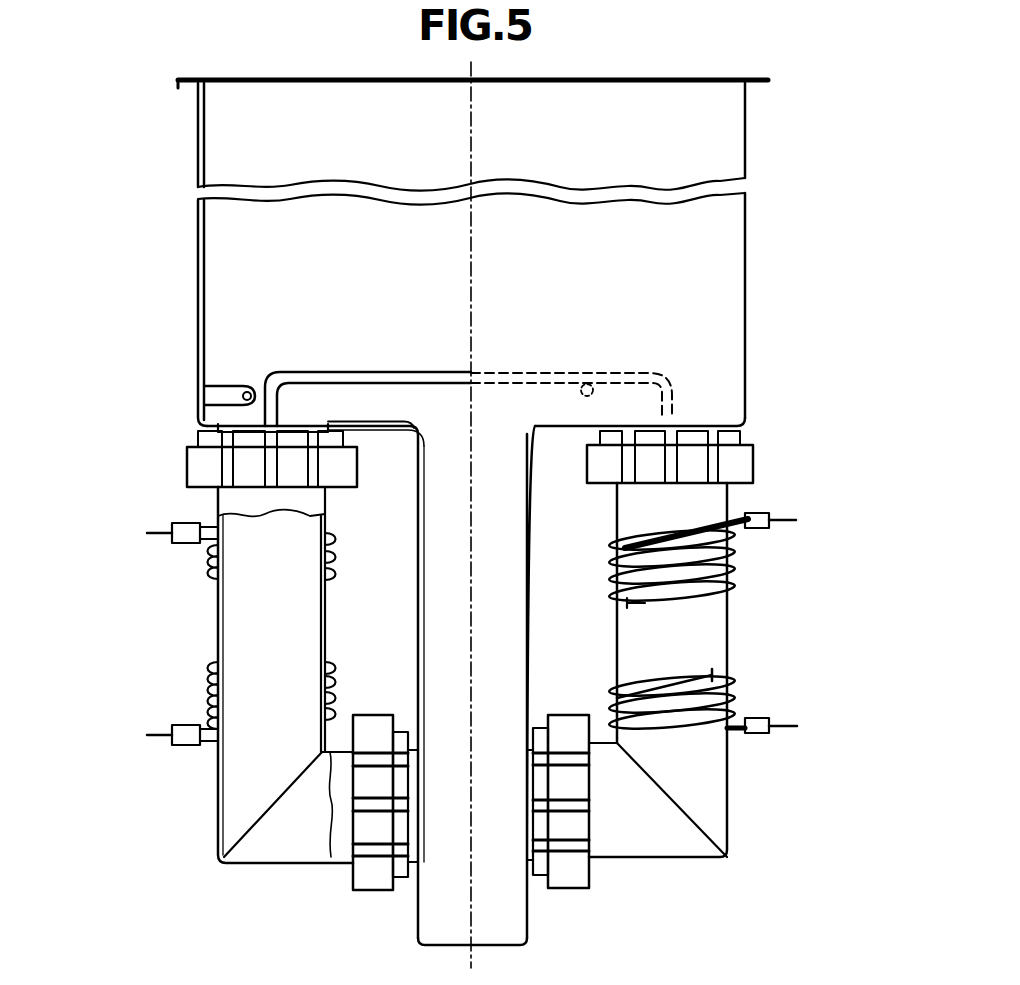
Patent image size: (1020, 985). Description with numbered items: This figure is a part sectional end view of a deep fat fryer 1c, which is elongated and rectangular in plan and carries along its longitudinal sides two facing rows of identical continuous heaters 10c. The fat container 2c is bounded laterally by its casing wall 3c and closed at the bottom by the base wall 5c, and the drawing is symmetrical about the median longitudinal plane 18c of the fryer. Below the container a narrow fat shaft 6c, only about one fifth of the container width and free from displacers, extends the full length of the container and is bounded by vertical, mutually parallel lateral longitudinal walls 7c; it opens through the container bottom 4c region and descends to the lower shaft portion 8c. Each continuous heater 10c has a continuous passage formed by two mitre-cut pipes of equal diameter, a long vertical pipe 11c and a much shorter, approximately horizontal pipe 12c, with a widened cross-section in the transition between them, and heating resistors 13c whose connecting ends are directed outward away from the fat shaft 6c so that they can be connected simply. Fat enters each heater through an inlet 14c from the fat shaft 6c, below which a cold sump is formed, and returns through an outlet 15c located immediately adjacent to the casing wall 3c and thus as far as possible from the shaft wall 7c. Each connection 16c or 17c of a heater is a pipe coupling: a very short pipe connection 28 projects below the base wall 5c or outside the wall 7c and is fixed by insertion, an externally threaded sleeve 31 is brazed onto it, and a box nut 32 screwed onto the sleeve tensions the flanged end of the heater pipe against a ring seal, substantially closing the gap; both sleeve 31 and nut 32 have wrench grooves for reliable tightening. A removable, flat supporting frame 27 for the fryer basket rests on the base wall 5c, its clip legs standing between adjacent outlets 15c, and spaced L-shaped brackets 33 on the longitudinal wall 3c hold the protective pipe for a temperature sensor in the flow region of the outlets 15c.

The deep fat fryer 1c is at (103, 132).
The fat container 2c is at (438, 253).
The casing wall 3c is at (198, 240).
The tank top rim 4c is at (190, 86).
The base wall 5c is at (393, 418).
The fat shaft 6c is at (458, 440).
The lateral longitudinal wall 7c is at (417, 626).
The bottom horizontal pipe 8c is at (446, 942).
The continuous heater 10c is at (206, 878).
The vertical pipe 11c is at (218, 628).
The horizontal pipe 12c is at (277, 862).
The heating resistor 13c is at (357, 549).
The inlet 14c is at (423, 789).
The outlet 15c is at (300, 424).
The connection 16c is at (400, 891).
The connection 17c is at (187, 448).
The median longitudinal plane 18c is at (473, 322).
The supporting frame 27 is at (363, 372).
The pipe connection 28 is at (536, 803).
The threaded sleeve 31 is at (542, 822).
The box nut 32 is at (577, 782).
The L-shaped bracket 33 is at (223, 392).